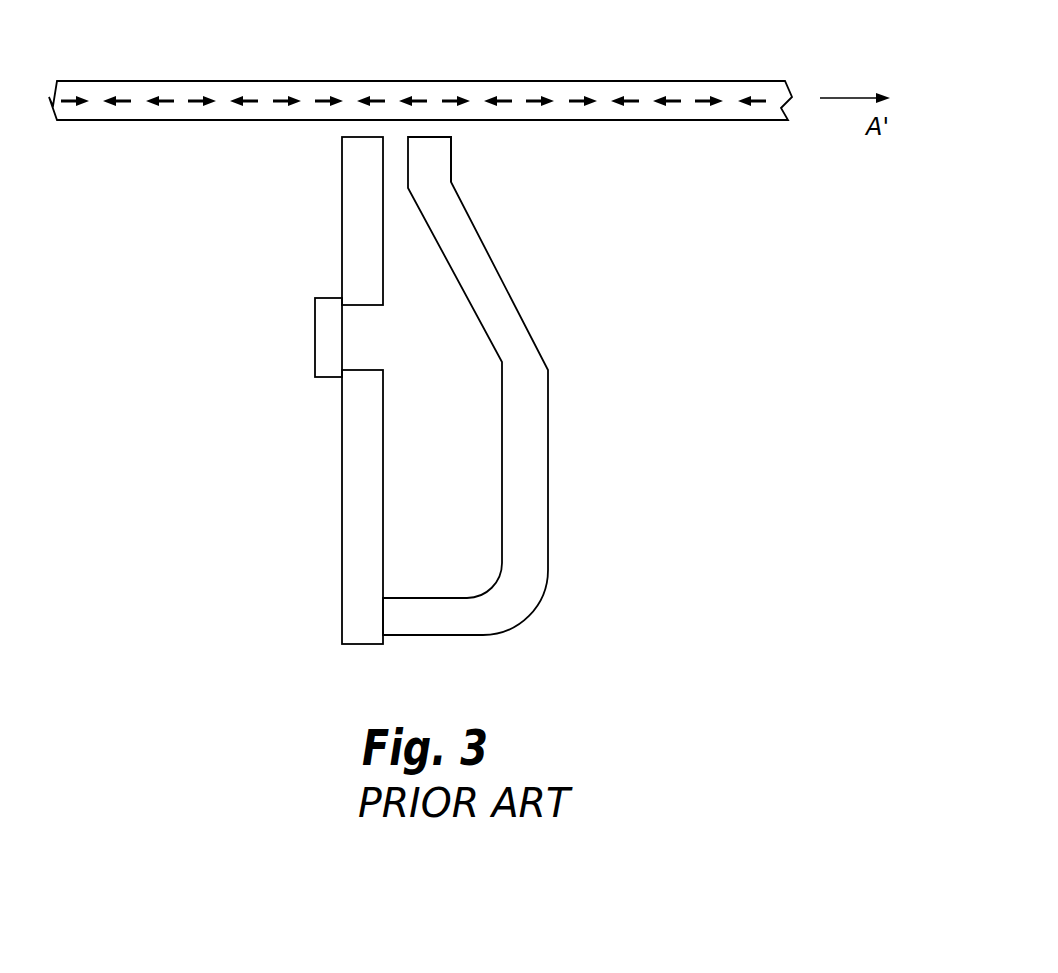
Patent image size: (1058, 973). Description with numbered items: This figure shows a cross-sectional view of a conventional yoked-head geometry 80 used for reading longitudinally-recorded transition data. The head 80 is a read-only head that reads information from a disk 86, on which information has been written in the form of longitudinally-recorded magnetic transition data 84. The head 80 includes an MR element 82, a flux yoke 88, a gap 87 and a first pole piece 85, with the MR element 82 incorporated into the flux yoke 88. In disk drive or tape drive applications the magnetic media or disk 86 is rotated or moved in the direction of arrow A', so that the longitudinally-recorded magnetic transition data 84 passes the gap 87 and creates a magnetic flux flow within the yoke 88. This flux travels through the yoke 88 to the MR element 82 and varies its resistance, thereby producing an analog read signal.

The yoked-head geometry 80 is at (462, 388).
The MR element 82 is at (315, 338).
The longitudinally-recorded magnetic transition data 84 is at (668, 100).
The first pole piece 85 is at (430, 133).
The disk 86 is at (715, 81).
The gap 87 is at (397, 148).
The flux yoke 88 is at (487, 288).